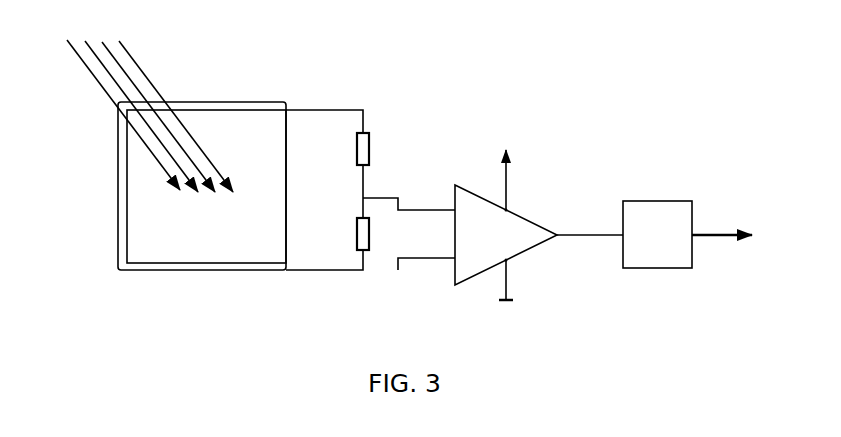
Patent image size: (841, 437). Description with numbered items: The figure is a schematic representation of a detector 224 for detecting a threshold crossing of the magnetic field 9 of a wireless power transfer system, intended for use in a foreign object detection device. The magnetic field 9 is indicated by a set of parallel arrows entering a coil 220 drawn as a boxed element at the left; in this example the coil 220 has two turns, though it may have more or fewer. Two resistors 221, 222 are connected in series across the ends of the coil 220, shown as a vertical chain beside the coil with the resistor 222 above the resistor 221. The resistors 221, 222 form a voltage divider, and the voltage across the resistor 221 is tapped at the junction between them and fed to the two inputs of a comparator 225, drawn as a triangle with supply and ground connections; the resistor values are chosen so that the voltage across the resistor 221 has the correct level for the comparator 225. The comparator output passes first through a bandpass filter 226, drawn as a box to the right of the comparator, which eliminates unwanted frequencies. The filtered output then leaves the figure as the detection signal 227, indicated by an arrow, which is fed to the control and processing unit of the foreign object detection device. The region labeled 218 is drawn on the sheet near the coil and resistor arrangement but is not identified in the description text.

The magnetic field 9 is at (162, 92).
The photodetector unit 218 is at (343, 70).
The coil 220 is at (113, 217).
The resistor 221 is at (370, 252).
The resistor 222 is at (369, 140).
The detector 224 is at (688, 100).
The comparator 225 is at (506, 225).
The bandpass filter 226 is at (657, 234).
The detection signal 227 is at (718, 232).